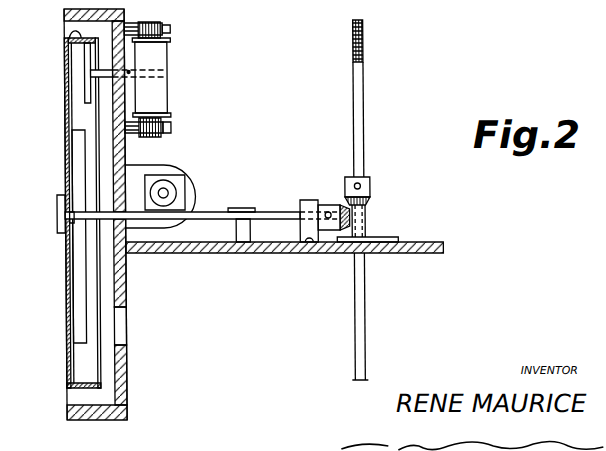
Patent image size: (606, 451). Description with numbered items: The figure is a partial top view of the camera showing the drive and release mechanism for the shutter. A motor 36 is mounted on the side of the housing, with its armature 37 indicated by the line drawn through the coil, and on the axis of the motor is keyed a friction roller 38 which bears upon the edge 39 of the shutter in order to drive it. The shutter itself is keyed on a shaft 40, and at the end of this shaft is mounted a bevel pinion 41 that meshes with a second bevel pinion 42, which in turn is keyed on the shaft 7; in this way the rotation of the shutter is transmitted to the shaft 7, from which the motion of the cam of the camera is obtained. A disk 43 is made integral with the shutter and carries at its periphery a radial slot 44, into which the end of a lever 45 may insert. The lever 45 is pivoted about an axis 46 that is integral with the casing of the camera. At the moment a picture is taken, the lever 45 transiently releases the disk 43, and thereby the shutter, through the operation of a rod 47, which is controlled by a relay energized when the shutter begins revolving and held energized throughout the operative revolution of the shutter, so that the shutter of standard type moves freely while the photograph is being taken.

The shaft 7 is at (356, 101).
The motor 36 is at (158, 94).
The armature rod 37 is at (130, 72).
The friction roller 38 is at (87, 89).
The edge of the shutter 39 is at (67, 31).
The shaft 40 is at (272, 212).
The bevel pinion 41 is at (343, 206).
The second bevel pinion 42 is at (370, 200).
The disk 43 is at (74, 167).
The radial slot 44 is at (70, 228).
The lever 45 is at (213, 212).
The axis 46 is at (241, 240).
The rod 47 is at (162, 192).